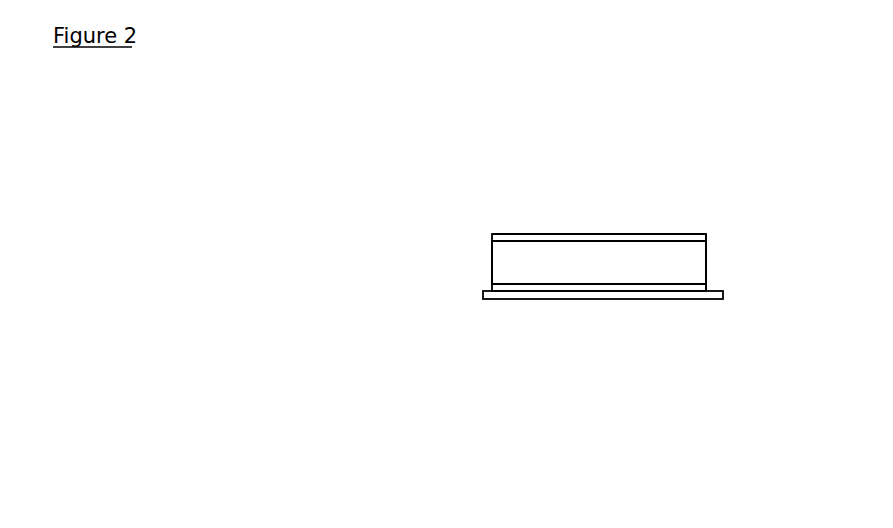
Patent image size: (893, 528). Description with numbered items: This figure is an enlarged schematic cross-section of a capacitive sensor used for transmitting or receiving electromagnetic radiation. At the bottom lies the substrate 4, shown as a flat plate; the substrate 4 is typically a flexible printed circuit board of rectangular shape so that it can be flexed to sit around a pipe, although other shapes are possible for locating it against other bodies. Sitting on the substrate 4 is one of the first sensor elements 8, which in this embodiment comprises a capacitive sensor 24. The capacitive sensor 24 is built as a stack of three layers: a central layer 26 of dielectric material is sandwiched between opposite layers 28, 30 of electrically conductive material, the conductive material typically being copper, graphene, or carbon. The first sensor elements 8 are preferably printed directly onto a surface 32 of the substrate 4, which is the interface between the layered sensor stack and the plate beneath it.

The substrate 4 is at (483, 290).
The first sensor element 8 is at (513, 264).
The capacitive sensor 24 is at (555, 250).
The central layer 26 is at (590, 257).
The layer of electrically conductive material 28 is at (633, 282).
The layer of electrically conductive material 30 is at (683, 234).
The surface 32 is at (718, 291).